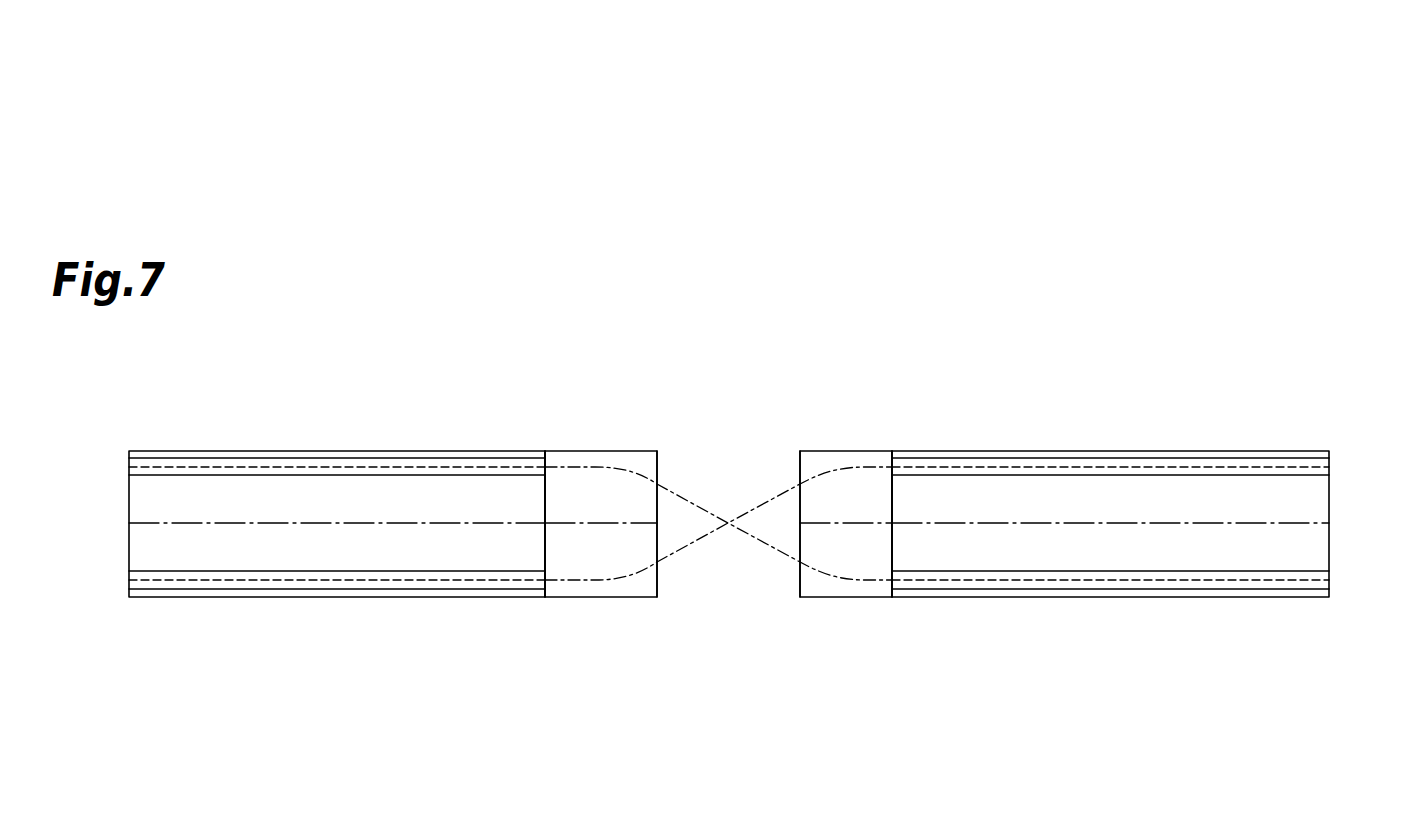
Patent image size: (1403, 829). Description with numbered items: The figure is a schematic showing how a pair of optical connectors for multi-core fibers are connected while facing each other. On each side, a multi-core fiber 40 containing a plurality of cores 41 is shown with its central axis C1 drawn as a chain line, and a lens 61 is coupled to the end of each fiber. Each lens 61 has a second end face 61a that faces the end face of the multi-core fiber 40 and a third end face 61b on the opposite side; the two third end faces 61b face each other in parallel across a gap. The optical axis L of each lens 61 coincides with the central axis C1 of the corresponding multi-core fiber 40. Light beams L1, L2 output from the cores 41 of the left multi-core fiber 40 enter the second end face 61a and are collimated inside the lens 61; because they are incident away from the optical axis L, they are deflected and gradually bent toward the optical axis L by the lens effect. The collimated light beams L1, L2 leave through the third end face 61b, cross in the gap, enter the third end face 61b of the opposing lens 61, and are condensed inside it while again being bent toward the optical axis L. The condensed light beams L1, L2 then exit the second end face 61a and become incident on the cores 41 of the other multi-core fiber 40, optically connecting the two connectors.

The multi-core fiber 40 is at (458, 445).
The cores 41 is at (153, 562).
The lens 61 is at (603, 445).
The second end face 61a is at (545, 494).
The third end face 61b is at (657, 465).
The central axis C1 is at (337, 523).
The optical axis L is at (598, 525).
The light beam L1 is at (697, 496).
The light beam L2 is at (683, 557).